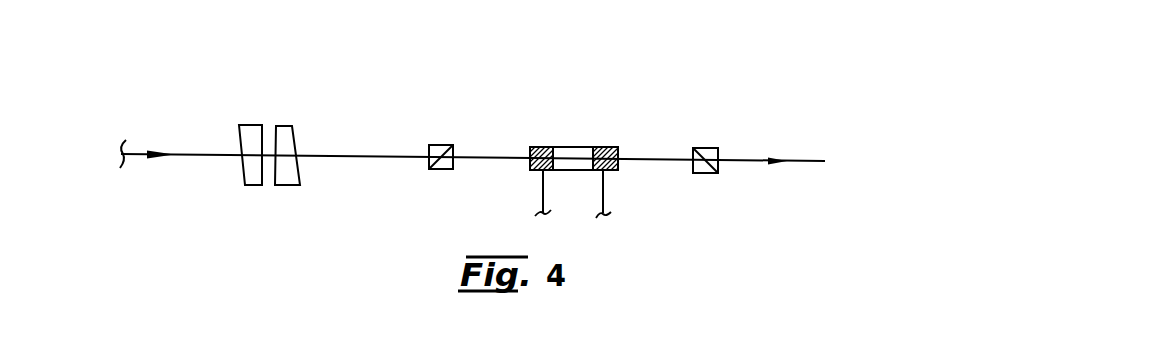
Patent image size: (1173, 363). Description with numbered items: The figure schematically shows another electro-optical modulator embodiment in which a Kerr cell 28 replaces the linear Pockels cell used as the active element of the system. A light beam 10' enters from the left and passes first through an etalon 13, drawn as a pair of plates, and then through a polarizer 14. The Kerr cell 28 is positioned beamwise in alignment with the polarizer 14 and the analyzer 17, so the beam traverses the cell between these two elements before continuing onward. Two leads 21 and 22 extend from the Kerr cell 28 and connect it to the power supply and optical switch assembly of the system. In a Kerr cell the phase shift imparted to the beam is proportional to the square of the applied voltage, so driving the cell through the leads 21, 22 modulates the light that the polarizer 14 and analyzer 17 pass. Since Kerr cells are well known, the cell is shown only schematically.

The light beam 10' is at (472, 168).
The etalon 13 is at (308, 129).
The polarizer 14 is at (440, 143).
The Kerr cell 28 is at (563, 146).
The lead 21 is at (543, 185).
The lead 22 is at (603, 185).
The analyzer 17 is at (693, 148).